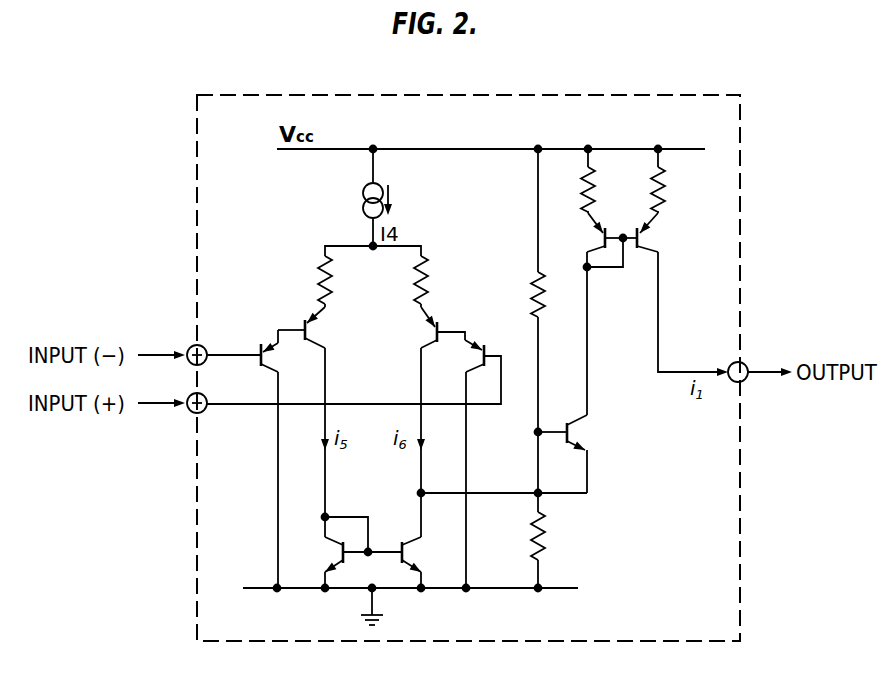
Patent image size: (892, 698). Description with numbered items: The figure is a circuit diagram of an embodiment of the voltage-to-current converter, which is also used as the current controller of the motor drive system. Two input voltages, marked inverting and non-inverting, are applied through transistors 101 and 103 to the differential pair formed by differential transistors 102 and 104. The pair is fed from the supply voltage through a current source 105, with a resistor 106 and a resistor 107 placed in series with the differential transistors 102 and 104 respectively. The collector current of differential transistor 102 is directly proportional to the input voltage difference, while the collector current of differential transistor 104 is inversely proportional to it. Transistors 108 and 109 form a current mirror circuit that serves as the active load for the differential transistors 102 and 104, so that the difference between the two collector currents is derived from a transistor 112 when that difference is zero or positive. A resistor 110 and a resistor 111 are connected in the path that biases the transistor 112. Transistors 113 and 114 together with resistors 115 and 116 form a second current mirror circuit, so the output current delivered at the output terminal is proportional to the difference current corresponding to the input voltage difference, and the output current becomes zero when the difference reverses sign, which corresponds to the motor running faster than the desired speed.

The transistor 101 is at (242, 449).
The differential transistor 102 is at (301, 403).
The transistor 103 is at (478, 356).
The differential transistor 104 is at (430, 330).
The current source 105 is at (392, 191).
The resistor 106 is at (346, 276).
The resistor 107 is at (421, 276).
The transistor 108 is at (327, 551).
The transistor 109 is at (413, 539).
The resistor 110 is at (555, 323).
The resistor 111 is at (542, 550).
The transistor 112 is at (524, 380).
The transistor 113 is at (592, 242).
The transistor 114 is at (682, 294).
The resistor 115 is at (605, 181).
The resistor 116 is at (680, 181).